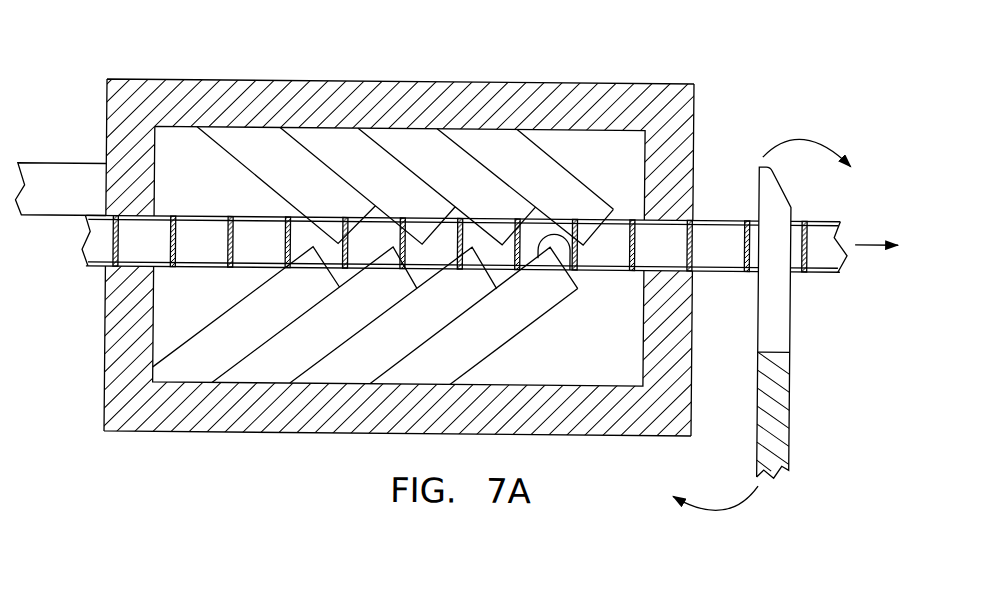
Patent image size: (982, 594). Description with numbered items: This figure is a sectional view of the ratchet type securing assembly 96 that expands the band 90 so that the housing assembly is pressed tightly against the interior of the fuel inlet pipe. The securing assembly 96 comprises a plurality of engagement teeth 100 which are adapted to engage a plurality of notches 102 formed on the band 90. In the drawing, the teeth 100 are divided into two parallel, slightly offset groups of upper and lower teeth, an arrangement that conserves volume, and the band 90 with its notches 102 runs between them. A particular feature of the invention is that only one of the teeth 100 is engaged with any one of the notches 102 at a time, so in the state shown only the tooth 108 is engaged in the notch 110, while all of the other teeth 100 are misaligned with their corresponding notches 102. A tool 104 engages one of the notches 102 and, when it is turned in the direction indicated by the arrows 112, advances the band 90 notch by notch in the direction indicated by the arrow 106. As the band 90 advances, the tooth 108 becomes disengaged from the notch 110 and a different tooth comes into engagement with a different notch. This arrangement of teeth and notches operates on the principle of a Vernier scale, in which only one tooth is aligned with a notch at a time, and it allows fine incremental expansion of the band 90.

The band 90 is at (68, 164).
The ratchet type securing assembly 96 is at (527, 80).
The engagement teeth 100 is at (507, 150).
The notches 102 is at (257, 218).
The tool 104 is at (781, 370).
The arrow 106 is at (870, 241).
The tooth 108 is at (549, 286).
The notch 110 is at (568, 247).
The arrows 112 is at (808, 136).